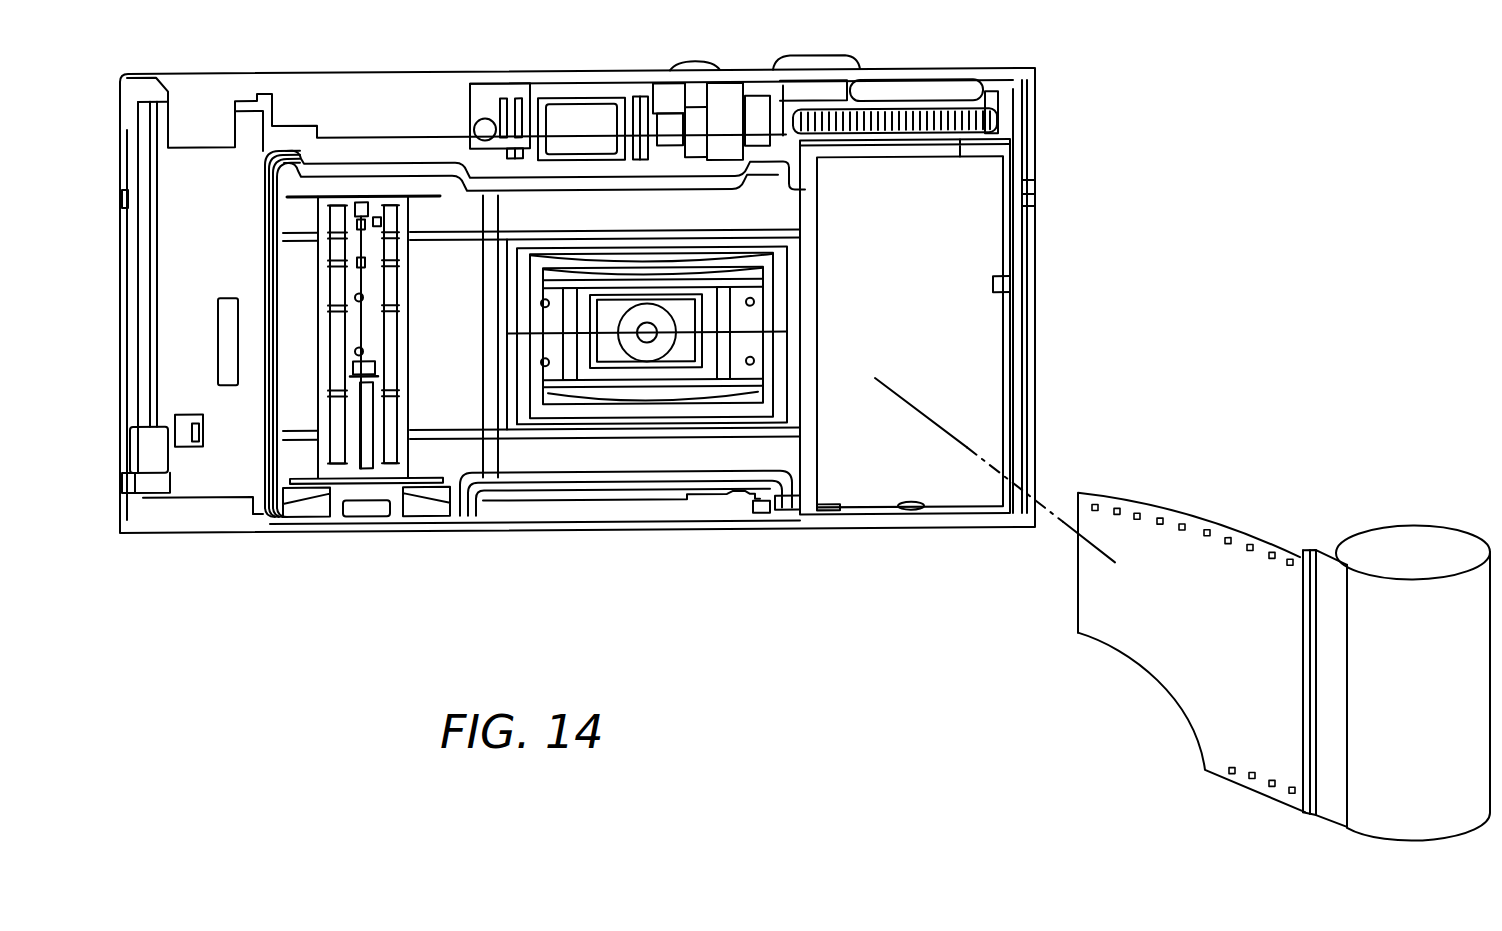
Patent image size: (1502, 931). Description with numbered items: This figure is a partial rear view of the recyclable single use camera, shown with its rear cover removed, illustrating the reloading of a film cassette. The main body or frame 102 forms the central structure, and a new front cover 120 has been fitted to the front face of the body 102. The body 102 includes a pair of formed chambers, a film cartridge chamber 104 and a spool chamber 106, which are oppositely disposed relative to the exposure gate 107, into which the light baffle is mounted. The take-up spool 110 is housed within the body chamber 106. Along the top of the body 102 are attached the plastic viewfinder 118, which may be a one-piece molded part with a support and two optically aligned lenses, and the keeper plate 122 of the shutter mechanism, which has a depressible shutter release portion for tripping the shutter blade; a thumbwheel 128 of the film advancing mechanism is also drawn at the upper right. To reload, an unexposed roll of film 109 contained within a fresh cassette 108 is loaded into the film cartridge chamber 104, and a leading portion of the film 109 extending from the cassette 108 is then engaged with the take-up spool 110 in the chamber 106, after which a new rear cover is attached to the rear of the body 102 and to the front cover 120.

The main body 102 is at (709, 462).
The film cartridge chamber 104 is at (990, 359).
The spool chamber 106 is at (470, 414).
The exposure gate 107 is at (611, 385).
The film cassette 108 is at (1365, 550).
The film 109 is at (1130, 517).
The take-up spool 110 is at (404, 289).
The viewfinder 118 is at (573, 113).
The front cover 120 is at (262, 73).
The keeper plate 122 is at (797, 78).
The thumbwheel 128 is at (1012, 108).